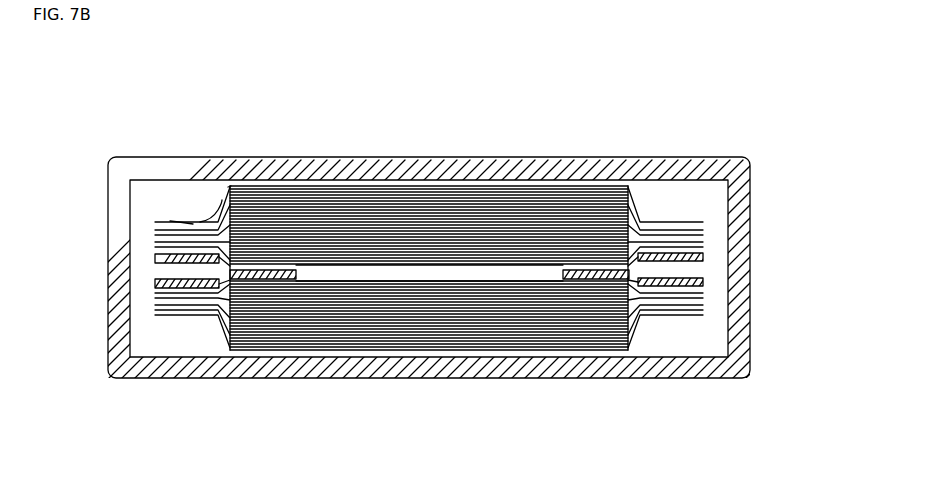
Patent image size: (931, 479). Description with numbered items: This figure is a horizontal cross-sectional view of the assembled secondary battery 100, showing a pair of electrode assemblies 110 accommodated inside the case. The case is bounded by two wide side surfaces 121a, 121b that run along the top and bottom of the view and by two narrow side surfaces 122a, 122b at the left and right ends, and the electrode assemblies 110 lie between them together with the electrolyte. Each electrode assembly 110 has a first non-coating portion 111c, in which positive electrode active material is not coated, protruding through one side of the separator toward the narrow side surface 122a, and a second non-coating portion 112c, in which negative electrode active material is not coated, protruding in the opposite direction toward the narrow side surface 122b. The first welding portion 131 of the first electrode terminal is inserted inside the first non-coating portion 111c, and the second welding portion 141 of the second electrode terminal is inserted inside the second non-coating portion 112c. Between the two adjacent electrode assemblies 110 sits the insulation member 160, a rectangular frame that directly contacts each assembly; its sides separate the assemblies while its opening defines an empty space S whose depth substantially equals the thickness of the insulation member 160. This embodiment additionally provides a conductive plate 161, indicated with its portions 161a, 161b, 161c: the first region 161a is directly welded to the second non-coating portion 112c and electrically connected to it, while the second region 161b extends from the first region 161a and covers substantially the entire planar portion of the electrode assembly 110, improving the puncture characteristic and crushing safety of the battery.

The secondary battery 100 is at (465, 258).
The electrode assembly 110 is at (553, 216).
The first non-coating portion 111c is at (175, 222).
The second non-coating portion 112c is at (683, 222).
The wide side surface 121a is at (408, 365).
The wide side surface 121b is at (447, 165).
The narrow side surface 122a is at (115, 231).
The narrow side surface 122b is at (745, 222).
The first welding portion 131 is at (155, 284).
The second welding portion 141 is at (703, 282).
The insulation member 160 is at (275, 280).
The conductive plate 161 is at (222, 141).
The first region 161a is at (170, 158).
The second region 161b is at (217, 158).
The third tab portion 161c is at (267, 146).
The space S is at (492, 278).